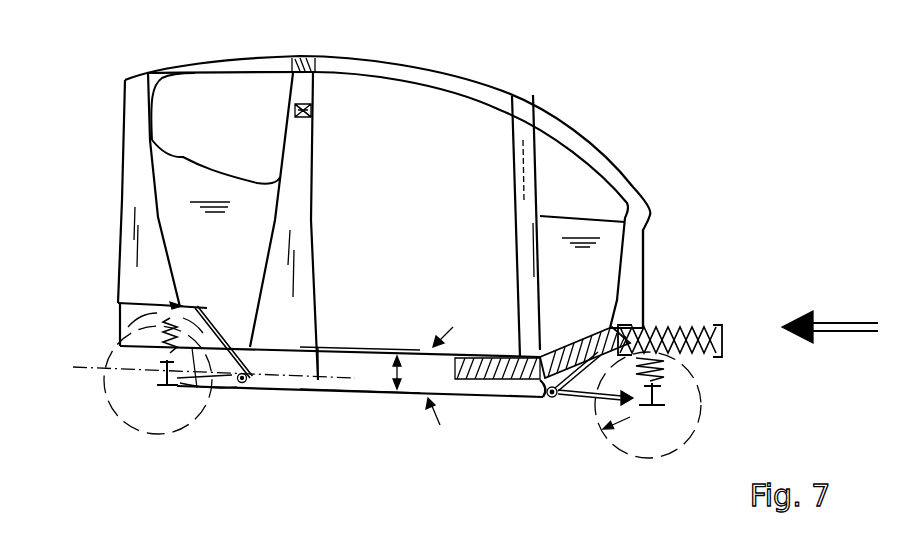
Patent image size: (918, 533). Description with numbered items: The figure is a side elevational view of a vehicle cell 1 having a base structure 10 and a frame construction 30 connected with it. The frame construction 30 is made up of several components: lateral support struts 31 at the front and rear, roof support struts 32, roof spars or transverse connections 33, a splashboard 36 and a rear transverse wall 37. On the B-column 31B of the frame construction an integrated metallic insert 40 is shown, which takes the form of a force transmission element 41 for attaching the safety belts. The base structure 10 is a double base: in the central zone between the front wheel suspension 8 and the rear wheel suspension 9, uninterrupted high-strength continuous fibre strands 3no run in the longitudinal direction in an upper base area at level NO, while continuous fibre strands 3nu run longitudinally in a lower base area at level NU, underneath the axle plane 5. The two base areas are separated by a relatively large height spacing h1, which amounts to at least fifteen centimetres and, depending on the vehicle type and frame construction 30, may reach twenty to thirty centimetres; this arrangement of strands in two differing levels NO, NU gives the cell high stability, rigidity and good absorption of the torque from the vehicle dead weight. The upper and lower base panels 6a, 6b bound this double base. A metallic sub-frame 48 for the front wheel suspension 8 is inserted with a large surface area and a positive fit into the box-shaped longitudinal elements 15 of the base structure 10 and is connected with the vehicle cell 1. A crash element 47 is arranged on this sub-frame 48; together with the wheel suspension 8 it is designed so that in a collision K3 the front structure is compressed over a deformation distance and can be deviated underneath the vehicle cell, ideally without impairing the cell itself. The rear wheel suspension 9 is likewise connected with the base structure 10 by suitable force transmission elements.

The vehicle cell 1 is at (573, 138).
The frame construction 30 is at (756, 88).
The lateral support struts 31 is at (138, 120).
The B-column 31B is at (300, 140).
The roof support struts 32 is at (472, 93).
The roof spars or transverse connections 33 is at (300, 67).
The splashboard 36 is at (590, 330).
The rear transverse wall 37 is at (218, 327).
The integrated metallic insert 40 is at (313, 108).
The force transmission element 41 is at (303, 110).
The crash element 47 is at (682, 323).
The metallic sub-frame 48 is at (578, 373).
The axle plane 5 is at (83, 362).
The front wheel suspension 8 is at (660, 383).
The rear wheel suspension 9 is at (200, 388).
The base structure 10 is at (762, 330).
The box-shaped longitudinal elements 15 is at (525, 397).
The upper floor panel 6a is at (418, 348).
The lower floor panel 6b is at (327, 393).
The continuous fibre strands running in longitudinal direction in upper base area 3no is at (348, 345).
The continuous fibre strands running in longitudinal direction in lower base area 3nu is at (373, 397).
The height spacing h1 is at (392, 356).
The upper base area level NO is at (462, 324).
The lower base area level NU is at (452, 425).
The collision K3 is at (842, 317).